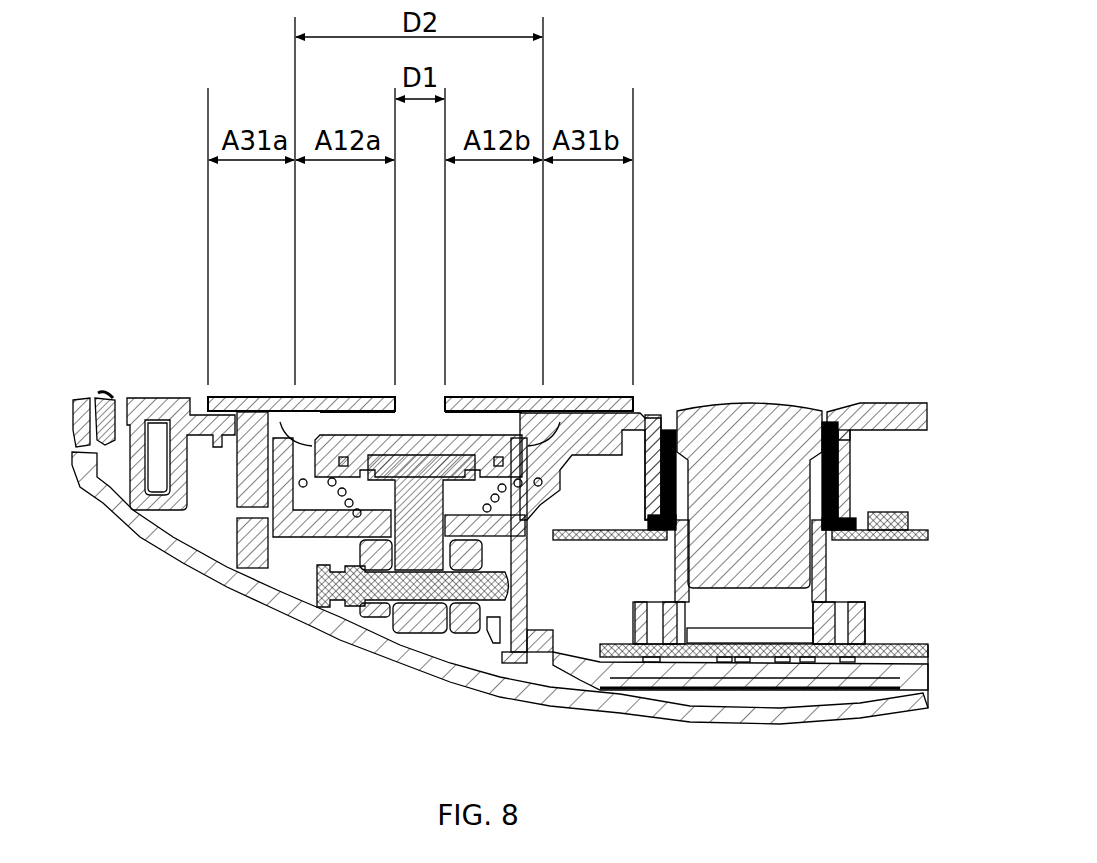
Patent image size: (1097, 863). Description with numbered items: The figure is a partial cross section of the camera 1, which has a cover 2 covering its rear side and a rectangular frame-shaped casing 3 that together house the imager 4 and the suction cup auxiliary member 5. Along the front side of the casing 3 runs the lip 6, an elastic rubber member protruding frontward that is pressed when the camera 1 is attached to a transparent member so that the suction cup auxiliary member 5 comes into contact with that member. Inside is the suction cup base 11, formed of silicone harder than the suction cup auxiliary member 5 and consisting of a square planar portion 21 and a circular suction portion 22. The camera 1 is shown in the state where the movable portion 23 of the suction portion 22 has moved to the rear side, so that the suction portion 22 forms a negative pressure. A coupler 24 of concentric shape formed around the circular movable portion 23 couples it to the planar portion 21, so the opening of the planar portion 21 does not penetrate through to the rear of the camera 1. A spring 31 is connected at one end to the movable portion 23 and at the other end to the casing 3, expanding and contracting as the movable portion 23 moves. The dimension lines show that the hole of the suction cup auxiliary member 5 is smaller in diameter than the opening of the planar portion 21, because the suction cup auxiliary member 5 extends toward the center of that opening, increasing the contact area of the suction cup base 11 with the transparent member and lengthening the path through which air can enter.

The camera 1 is at (677, 256).
The cover 2 is at (186, 568).
The casing 3 is at (88, 400).
The imager 4 is at (765, 406).
The suction cup auxiliary member 5 is at (344, 396).
The lip 6 is at (118, 396).
The suction cup base 11 is at (296, 552).
The planar portion 21 is at (255, 397).
The suction portion 22 is at (303, 309).
The movable portion 23 is at (418, 438).
The coupler 24 is at (313, 438).
The spring 31 is at (345, 515).